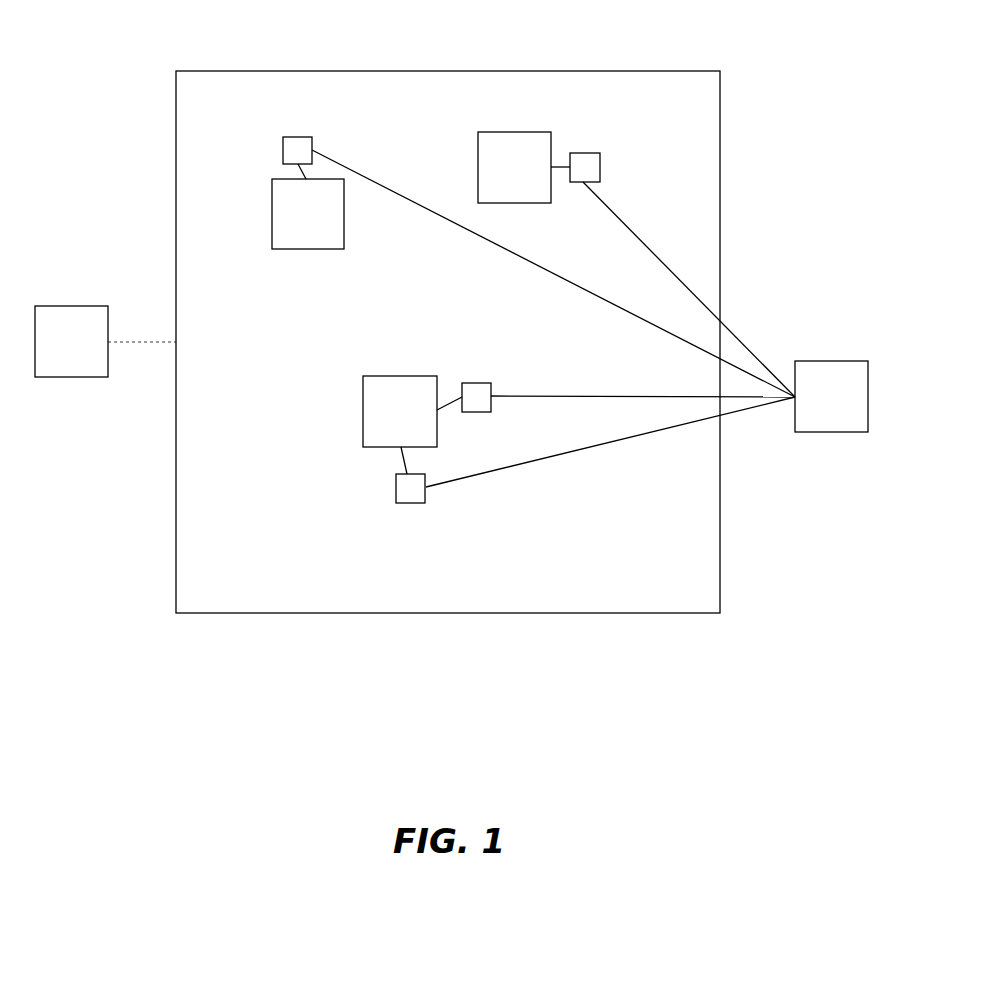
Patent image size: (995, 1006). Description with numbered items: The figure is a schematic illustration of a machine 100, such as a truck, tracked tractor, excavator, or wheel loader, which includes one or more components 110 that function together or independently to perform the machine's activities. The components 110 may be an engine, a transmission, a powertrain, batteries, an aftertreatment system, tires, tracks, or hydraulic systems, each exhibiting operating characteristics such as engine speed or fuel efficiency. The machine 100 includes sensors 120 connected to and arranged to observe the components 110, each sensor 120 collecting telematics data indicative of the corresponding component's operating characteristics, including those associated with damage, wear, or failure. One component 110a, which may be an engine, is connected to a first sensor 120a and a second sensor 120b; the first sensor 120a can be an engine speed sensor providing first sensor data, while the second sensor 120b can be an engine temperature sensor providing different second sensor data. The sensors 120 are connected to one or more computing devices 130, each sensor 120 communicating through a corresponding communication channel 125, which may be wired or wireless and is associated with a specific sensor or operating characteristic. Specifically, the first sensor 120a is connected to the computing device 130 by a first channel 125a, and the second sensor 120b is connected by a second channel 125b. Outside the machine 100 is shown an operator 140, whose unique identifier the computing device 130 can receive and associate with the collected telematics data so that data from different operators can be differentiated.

The machine 100 is at (643, 71).
The component 110 is at (307, 250).
The component 110a is at (398, 376).
The sensor 120 is at (295, 136).
The first sensor 120a is at (483, 383).
The second sensor 120b is at (412, 500).
The communication channel 125 is at (473, 233).
The first channel 125a is at (568, 396).
The second channel 125b is at (540, 462).
The computing device 130 is at (830, 361).
The operator 140 is at (63, 306).